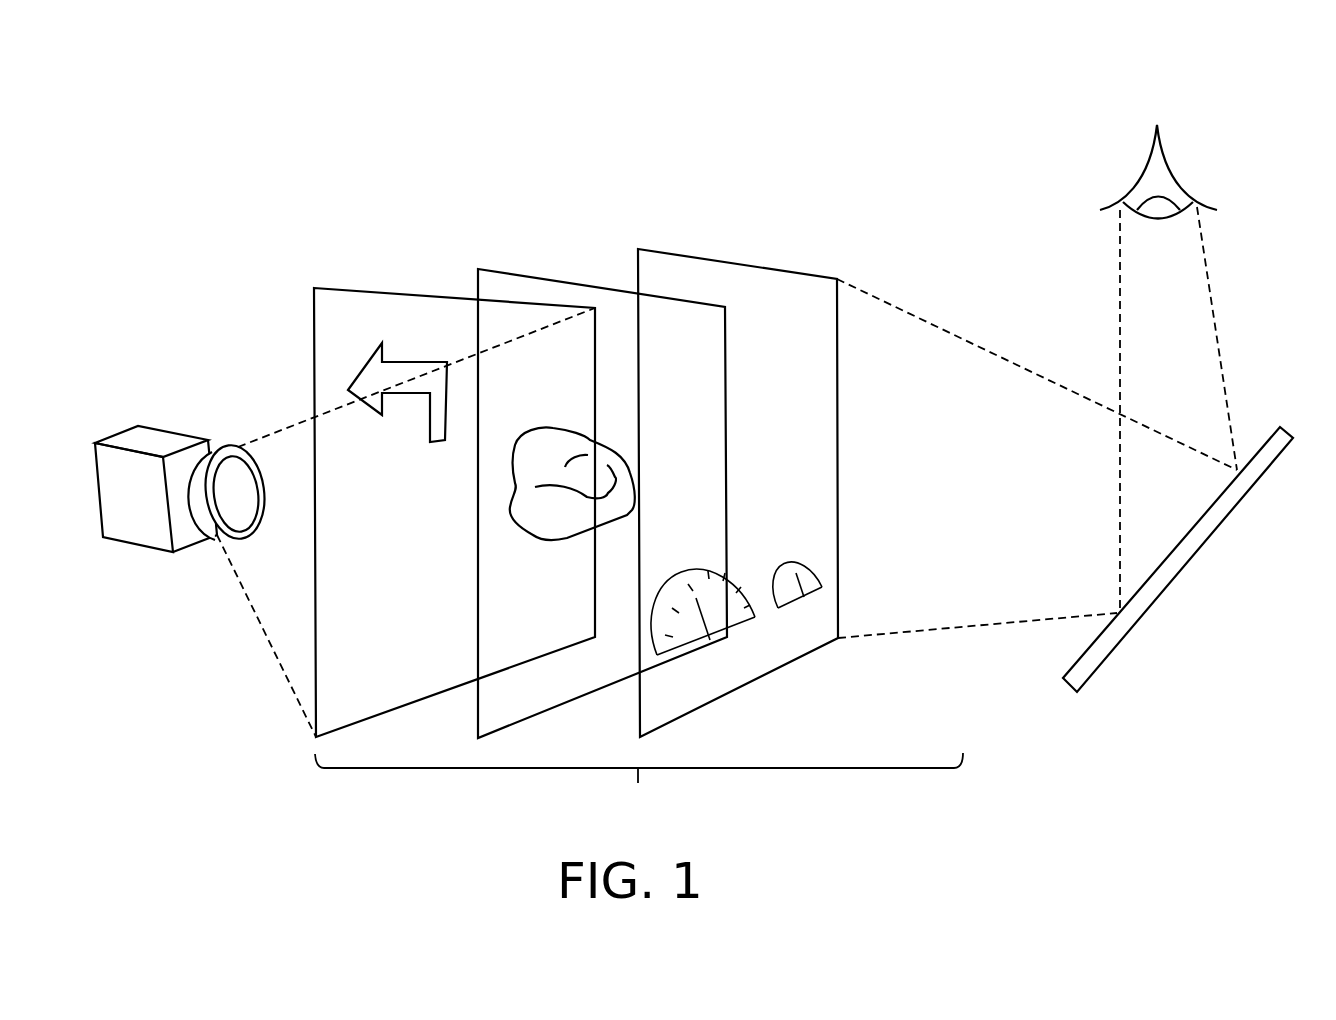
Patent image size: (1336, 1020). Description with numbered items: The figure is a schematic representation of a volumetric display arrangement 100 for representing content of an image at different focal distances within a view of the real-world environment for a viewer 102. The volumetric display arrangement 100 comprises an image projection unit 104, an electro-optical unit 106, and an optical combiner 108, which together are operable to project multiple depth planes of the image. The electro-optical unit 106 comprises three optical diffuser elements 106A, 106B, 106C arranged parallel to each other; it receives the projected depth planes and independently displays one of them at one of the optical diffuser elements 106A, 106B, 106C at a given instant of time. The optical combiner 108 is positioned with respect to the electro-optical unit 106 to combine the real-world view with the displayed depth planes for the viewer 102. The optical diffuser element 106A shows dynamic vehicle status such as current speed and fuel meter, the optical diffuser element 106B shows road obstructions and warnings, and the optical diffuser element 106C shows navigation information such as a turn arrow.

The volumetric display arrangement 100 is at (1237, 130).
The viewer 102 is at (1136, 158).
The image projection unit 104 is at (182, 453).
The electro-optical unit 106 is at (639, 789).
The optical diffuser element 106A is at (454, 472).
The optical diffuser element 106B is at (602, 464).
The optical diffuser element 106C is at (738, 454).
The optical combiner 108 is at (1178, 559).